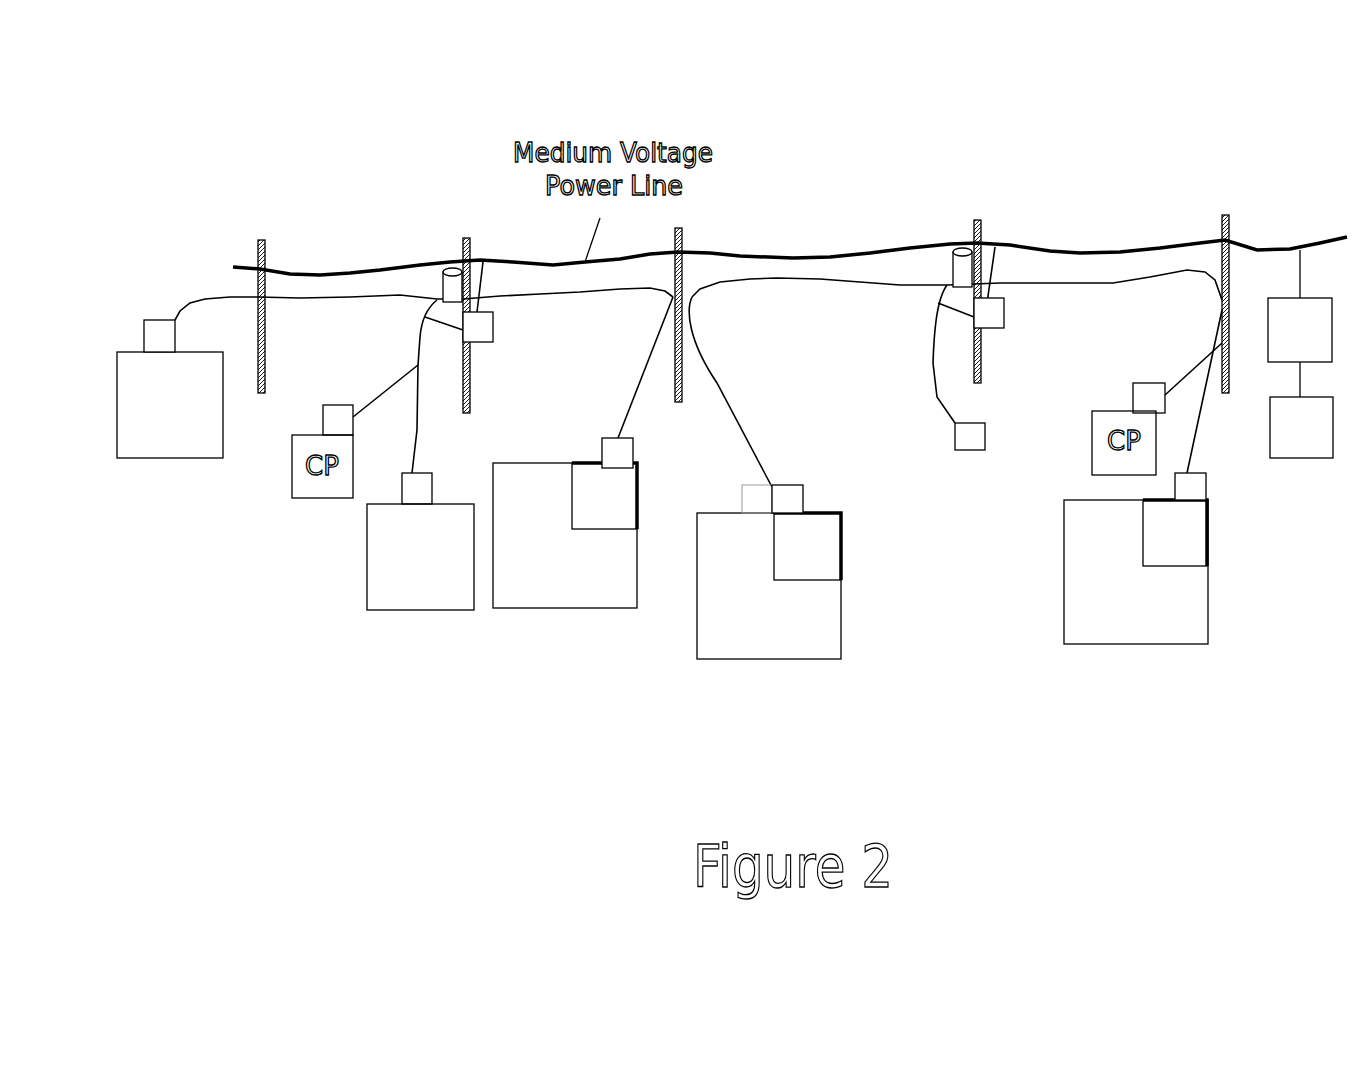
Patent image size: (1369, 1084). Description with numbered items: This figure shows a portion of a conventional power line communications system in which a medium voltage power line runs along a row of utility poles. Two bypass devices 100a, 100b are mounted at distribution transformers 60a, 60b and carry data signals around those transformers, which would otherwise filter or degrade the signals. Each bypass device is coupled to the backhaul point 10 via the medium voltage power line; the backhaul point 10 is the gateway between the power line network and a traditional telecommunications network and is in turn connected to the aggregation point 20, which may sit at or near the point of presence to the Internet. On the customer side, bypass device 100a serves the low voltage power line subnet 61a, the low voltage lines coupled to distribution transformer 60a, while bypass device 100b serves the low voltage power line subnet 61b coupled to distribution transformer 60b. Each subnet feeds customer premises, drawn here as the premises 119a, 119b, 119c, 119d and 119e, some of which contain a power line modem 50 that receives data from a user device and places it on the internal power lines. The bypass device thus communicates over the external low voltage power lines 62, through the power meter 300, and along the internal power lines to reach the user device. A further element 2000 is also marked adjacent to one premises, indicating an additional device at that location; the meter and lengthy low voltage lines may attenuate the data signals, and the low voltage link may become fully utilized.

The backhaul point 10 is at (1300, 306).
The aggregation point 20 is at (1301, 410).
The power line modem 50 is at (889, 509).
The distribution transformer 60a is at (959, 232).
The distribution transformer 60b is at (452, 257).
The LV power line subnet 61a is at (998, 633).
The LV power line subnet 61b is at (333, 632).
The external low voltage power lines 62 is at (633, 380).
The bypass device 100a is at (1004, 310).
The bypass device 100b is at (493, 322).
The customer premises 119a is at (1136, 572).
The customer premises 119b is at (769, 586).
The customer premises 119c is at (420, 541).
The customer premises 119d is at (565, 535).
The customer premises 119e is at (170, 405).
The power meter 300 is at (133, 333).
The data network access point 2000 is at (737, 502).